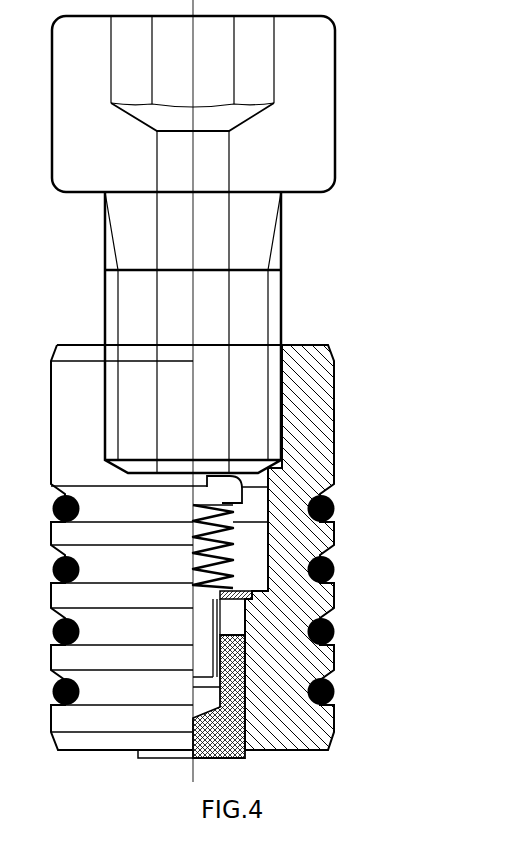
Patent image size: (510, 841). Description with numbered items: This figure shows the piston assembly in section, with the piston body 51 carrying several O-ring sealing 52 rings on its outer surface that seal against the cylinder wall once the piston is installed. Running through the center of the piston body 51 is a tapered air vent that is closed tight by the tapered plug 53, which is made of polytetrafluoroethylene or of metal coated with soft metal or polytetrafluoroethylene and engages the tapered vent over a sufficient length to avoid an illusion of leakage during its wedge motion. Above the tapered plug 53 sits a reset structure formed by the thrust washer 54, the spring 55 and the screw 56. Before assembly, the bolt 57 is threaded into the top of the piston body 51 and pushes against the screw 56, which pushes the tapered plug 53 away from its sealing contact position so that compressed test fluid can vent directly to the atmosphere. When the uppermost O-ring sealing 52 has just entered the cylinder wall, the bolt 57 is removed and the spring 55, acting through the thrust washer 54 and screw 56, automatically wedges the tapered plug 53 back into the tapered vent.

The piston body 51 is at (334, 733).
The O-ring sealing 52 is at (412, 703).
The tapered plug 53 is at (248, 678).
The thrust washer 54 is at (255, 595).
The spring 55 is at (233, 550).
The screw 56 is at (233, 498).
The bolt 57 is at (282, 223).